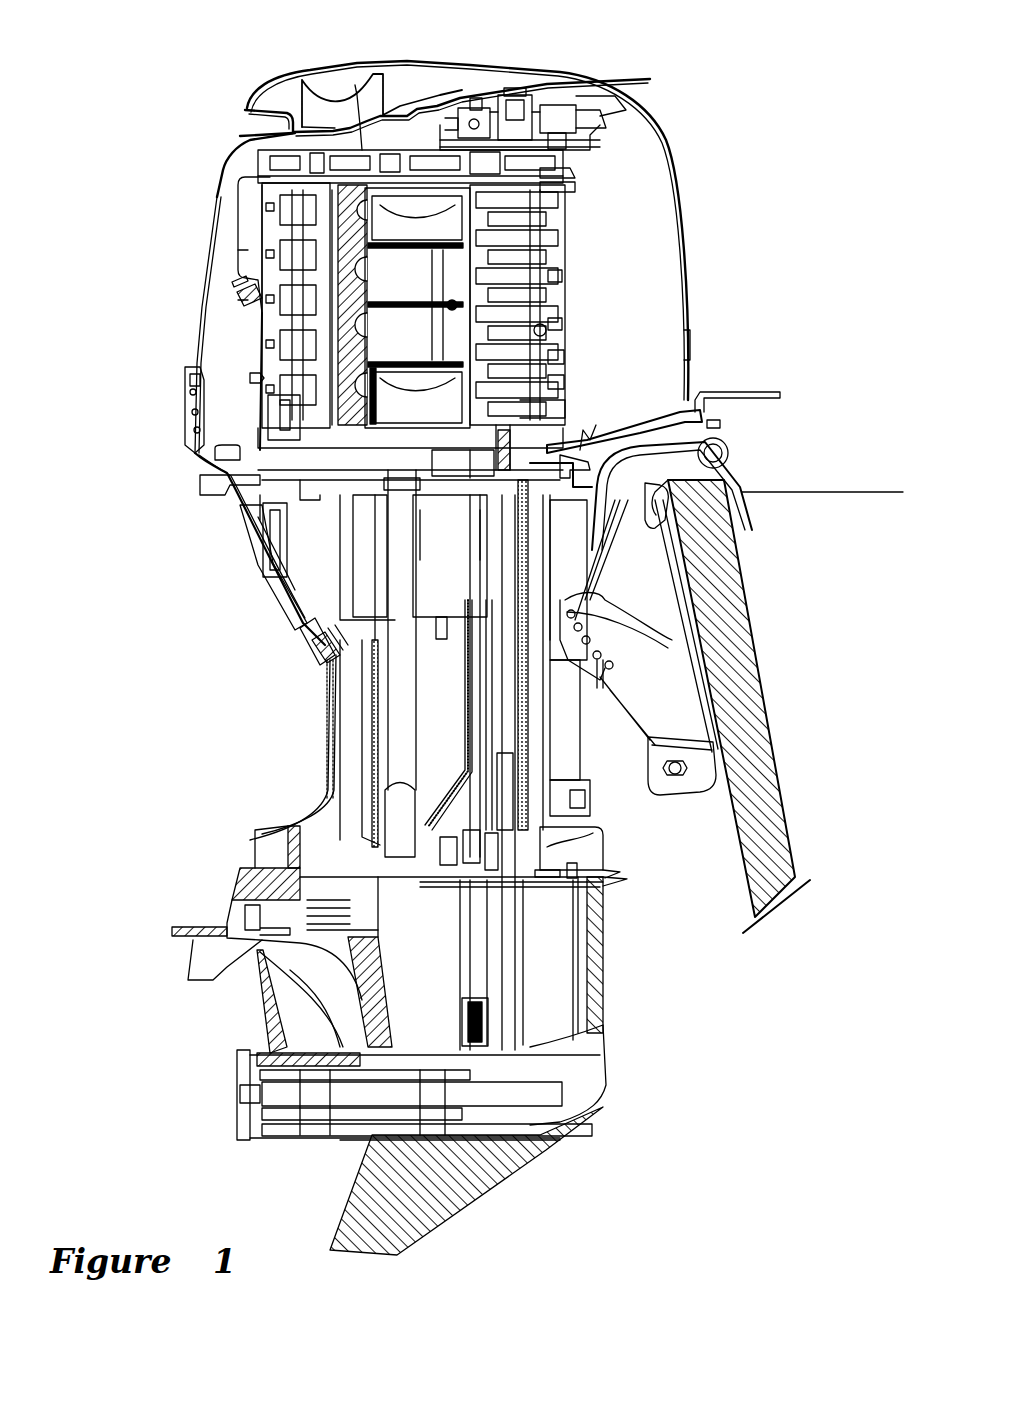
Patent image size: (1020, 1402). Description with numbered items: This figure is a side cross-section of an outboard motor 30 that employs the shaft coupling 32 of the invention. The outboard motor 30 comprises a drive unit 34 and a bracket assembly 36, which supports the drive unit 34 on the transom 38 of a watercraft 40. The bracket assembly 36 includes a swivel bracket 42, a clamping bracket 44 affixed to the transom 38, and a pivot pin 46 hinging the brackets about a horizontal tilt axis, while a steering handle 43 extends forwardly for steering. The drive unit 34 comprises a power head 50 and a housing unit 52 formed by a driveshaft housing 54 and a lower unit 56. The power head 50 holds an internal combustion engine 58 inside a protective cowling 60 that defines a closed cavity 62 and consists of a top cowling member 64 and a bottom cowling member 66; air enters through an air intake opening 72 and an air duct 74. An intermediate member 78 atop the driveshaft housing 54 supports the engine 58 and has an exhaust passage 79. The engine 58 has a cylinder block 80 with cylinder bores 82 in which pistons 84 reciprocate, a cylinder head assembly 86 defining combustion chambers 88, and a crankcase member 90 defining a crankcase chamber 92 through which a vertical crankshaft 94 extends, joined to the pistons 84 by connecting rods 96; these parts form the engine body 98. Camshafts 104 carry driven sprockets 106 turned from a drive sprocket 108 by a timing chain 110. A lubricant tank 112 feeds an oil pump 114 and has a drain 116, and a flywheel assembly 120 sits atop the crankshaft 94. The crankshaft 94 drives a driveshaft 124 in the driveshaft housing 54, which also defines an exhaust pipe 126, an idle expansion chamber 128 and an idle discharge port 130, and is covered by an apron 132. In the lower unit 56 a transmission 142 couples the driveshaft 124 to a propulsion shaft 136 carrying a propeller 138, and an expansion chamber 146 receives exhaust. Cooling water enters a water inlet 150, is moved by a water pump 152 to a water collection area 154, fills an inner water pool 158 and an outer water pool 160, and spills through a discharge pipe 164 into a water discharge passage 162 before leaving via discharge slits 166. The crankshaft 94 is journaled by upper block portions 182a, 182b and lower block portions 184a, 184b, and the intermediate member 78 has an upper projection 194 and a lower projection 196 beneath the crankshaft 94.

The outboard motor 30 is at (640, 78).
The shaft coupling 32 is at (660, 460).
The drive unit 34 is at (252, 703).
The bracket assembly 36 is at (668, 800).
The transom 38 is at (765, 775).
The watercraft 40 is at (845, 492).
The swivel bracket 42 is at (535, 728).
The steering handle 43 is at (710, 398).
The clamping bracket 44 is at (632, 703).
The pivot pin 46 is at (728, 452).
The power head 50 is at (692, 168).
The housing unit 52 is at (155, 810).
The driveshaft housing 54 is at (258, 850).
The lower unit 56 is at (245, 890).
The internal combustion engine 58 is at (690, 246).
The protective cowling 60 is at (85, 360).
The closed cavity 62 is at (235, 372).
The top cowling member 64 is at (187, 360).
The bottom cowling member 66 is at (212, 462).
The air intake opening 72 is at (245, 110).
The air duct 74 is at (302, 80).
The intermediate member 78 is at (450, 505).
The exhaust passage 79 is at (410, 512).
The cylinder block 80 is at (420, 155).
The cylinder bores 82 is at (410, 320).
The piston 84 is at (388, 395).
The cylinder head assembly 86 is at (345, 155).
The combustion chambers 88 is at (262, 210).
The crankcase member 90 is at (565, 280).
The crankcase chamber 92 is at (565, 318).
The crankshaft 94 is at (565, 388).
The connecting rods 96 is at (280, 245).
The engine body 98 is at (580, 255).
The camshafts 104 is at (300, 270).
The driven sprockets 106 is at (265, 162).
The drive sprocket 108 is at (540, 176).
The timing chain 110 is at (476, 98).
The lubricant tank 112 is at (305, 605).
The oil pump 114 is at (237, 298).
The drain 116 is at (330, 645).
The flywheel assembly 120 is at (530, 88).
The driveshaft 124 is at (550, 798).
The exhaust pipe 126 is at (417, 750).
The idle expansion chamber 128 is at (263, 535).
The idle discharge port 130 is at (243, 510).
The apron 132 is at (272, 555).
The propulsion shaft 136 is at (330, 1098).
The propeller 138 is at (260, 1000).
The transmission 142 is at (560, 1148).
The expansion chamber 146 is at (432, 966).
The water inlet 150 is at (465, 1022).
The water pump 152 is at (575, 848).
The water collection area 154 is at (480, 475).
The inner water pool 158 is at (440, 776).
The outer water pool 160 is at (370, 804).
The water discharge passage 162 is at (345, 730).
The discharge pipe 164 is at (343, 720).
The discharge slits 166 is at (342, 905).
The upper block portion 182a is at (552, 174).
The upper block portion 182b is at (575, 187).
The lower block portion 184a is at (565, 358).
The lower block portion 184b is at (565, 440).
The upper projection 194 is at (553, 452).
The lower projection 196 is at (567, 455).